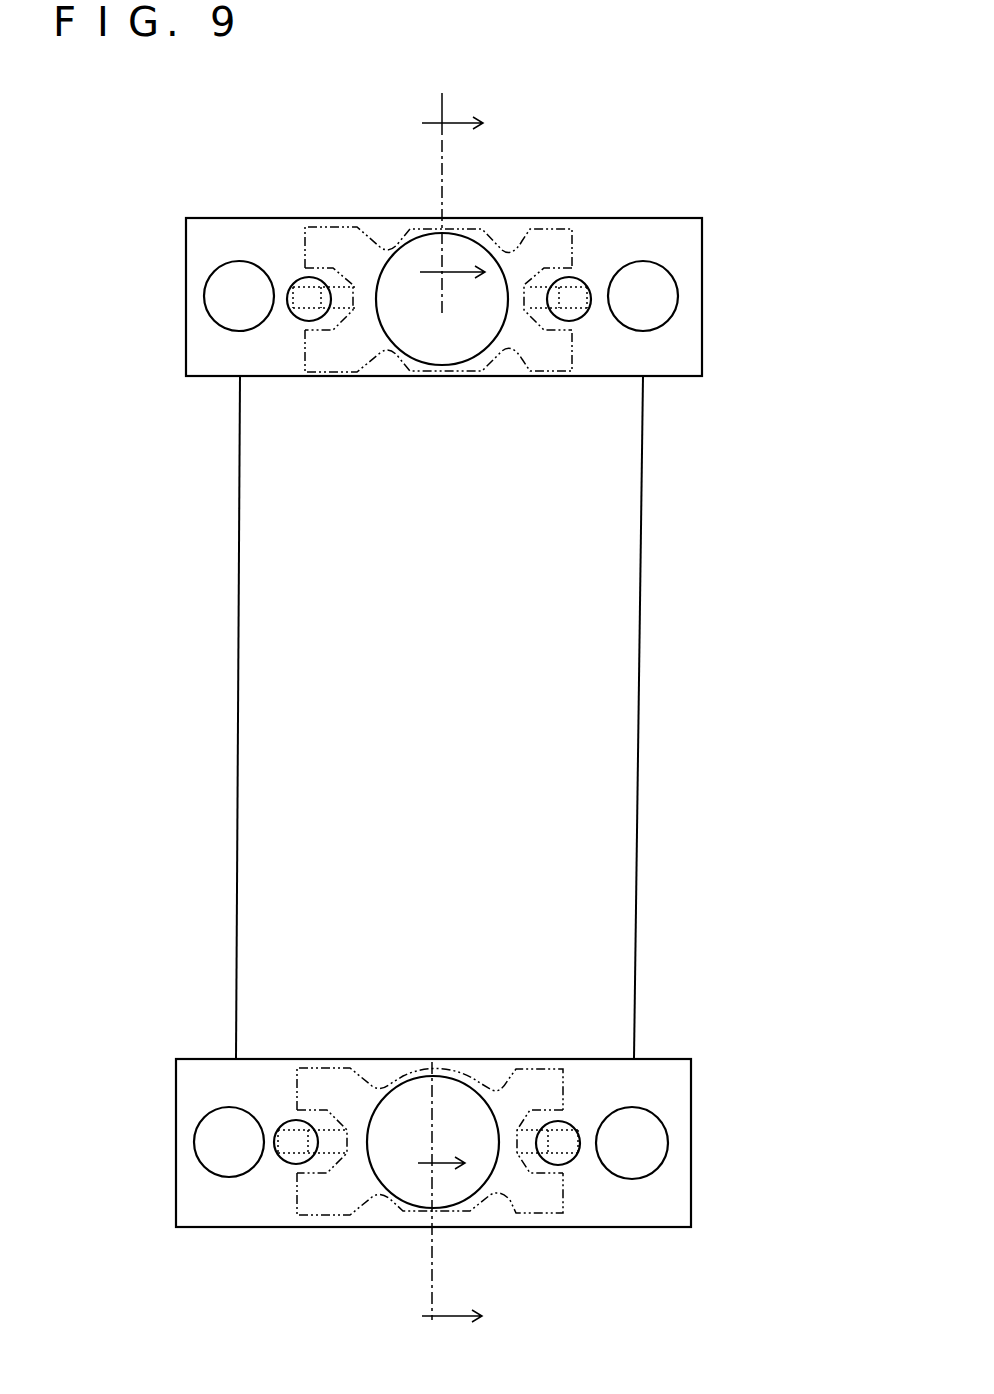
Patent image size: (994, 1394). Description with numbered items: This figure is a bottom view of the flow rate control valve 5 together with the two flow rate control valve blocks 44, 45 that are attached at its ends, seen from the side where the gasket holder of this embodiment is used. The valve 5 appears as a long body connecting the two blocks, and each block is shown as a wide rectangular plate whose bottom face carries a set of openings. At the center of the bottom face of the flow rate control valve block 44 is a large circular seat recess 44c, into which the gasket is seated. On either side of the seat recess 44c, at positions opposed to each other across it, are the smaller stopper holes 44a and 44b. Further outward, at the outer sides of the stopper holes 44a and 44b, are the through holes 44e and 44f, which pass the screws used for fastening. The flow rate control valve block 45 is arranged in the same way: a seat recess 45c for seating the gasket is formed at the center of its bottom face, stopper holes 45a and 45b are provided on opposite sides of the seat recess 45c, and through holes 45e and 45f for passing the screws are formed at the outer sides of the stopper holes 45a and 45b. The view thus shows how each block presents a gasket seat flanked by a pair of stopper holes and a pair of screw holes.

The flow rate control valve 5 is at (465, 671).
The flow rate control valve block 44 is at (690, 240).
The stopper hole 44a is at (313, 282).
The stopper hole 44b is at (575, 282).
The seat recess 44c is at (457, 234).
The through hole 44e is at (225, 272).
The through hole 44f is at (663, 300).
The flow rate control valve block 45 is at (683, 1198).
The stopper hole 45a is at (297, 1120).
The stopper hole 45b is at (560, 1120).
The seat recess 45c is at (440, 1097).
The through hole 45e is at (223, 1131).
The through hole 45f is at (645, 1137).